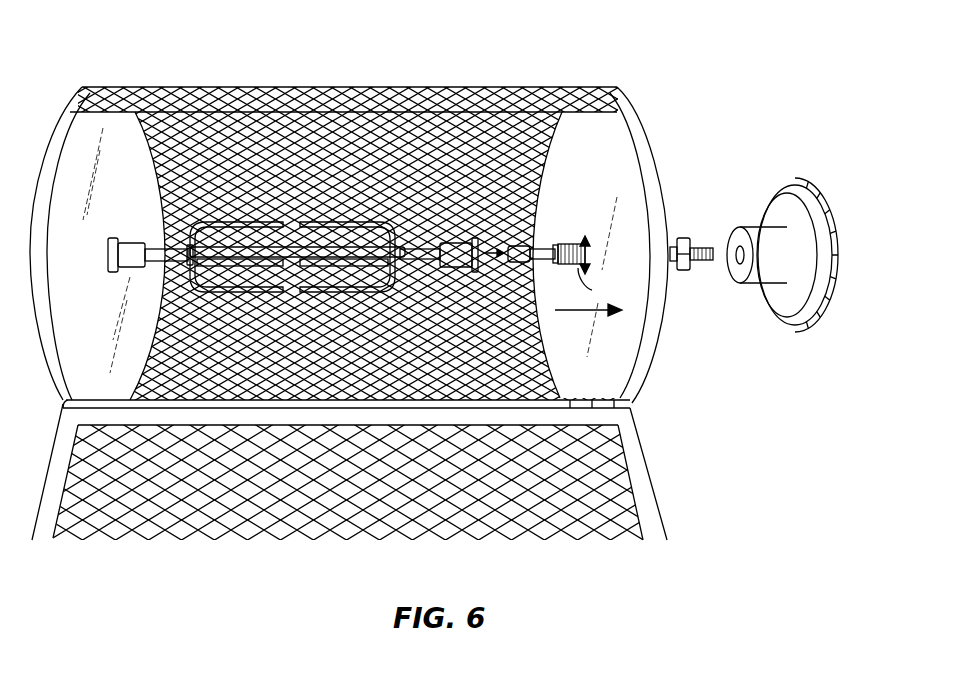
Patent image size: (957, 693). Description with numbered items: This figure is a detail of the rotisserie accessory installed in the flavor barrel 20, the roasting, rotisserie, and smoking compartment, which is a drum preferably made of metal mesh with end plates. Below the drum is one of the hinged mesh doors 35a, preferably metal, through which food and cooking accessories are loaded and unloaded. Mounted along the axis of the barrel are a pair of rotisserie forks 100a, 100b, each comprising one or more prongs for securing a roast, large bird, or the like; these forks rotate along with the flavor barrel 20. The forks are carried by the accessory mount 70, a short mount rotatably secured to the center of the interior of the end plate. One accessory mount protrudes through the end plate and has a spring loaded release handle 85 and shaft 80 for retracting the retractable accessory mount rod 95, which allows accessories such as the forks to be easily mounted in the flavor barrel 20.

The flavor barrel 20 is at (310, 87).
The hinged mesh door 35a is at (217, 497).
The accessory mount 70 is at (476, 240).
The shaft 80 is at (589, 276).
The spring loaded release handle 85 is at (805, 193).
The retractable accessory mount rod 95 is at (515, 250).
The rotisserie fork 100a is at (278, 222).
The rotisserie fork 100b is at (357, 222).